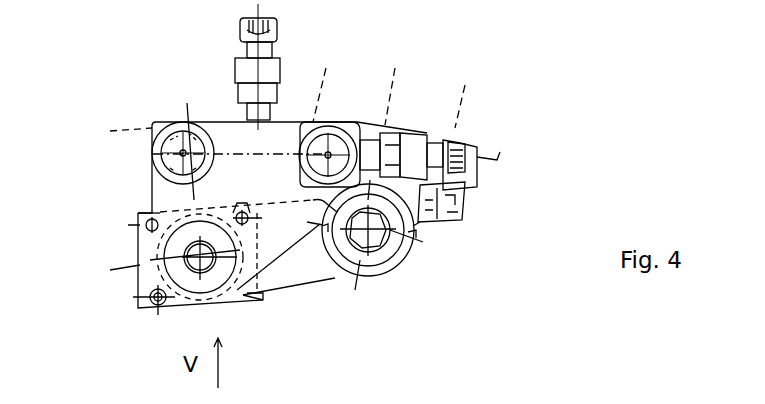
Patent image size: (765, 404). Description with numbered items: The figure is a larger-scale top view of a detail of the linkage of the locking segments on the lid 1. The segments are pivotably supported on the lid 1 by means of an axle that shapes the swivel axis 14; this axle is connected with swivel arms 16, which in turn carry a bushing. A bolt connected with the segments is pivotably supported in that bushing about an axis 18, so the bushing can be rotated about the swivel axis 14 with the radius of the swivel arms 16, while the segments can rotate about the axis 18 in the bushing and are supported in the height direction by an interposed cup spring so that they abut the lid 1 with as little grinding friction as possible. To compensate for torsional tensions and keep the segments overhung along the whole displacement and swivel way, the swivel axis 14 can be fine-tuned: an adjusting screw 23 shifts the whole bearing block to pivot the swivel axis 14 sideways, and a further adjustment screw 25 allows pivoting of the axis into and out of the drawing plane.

The lid 1 is at (587, 0).
The swivel axis 14 is at (162, 245).
The swivel arms 16 is at (297, 275).
The axis 18 is at (380, 250).
The adjusting screw 23 is at (465, 142).
The further adjustment screw 25 is at (243, 32).